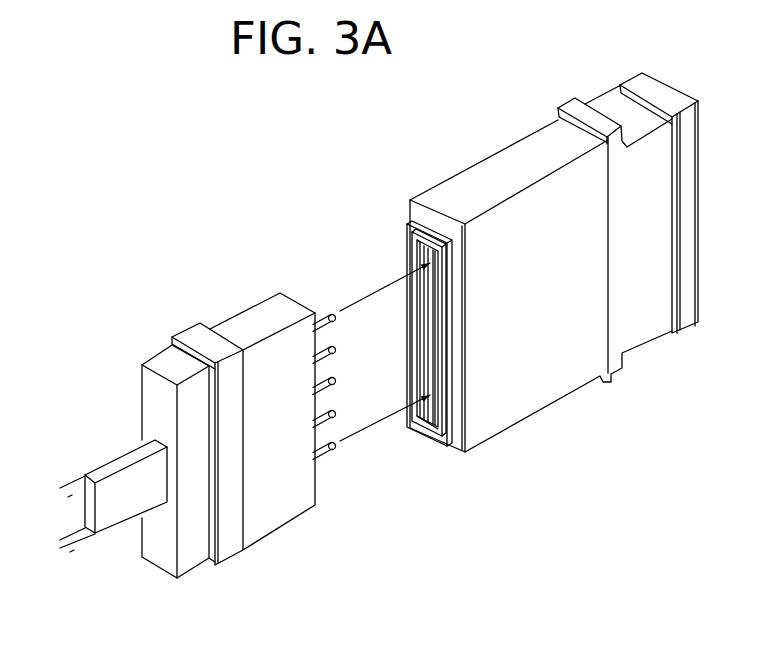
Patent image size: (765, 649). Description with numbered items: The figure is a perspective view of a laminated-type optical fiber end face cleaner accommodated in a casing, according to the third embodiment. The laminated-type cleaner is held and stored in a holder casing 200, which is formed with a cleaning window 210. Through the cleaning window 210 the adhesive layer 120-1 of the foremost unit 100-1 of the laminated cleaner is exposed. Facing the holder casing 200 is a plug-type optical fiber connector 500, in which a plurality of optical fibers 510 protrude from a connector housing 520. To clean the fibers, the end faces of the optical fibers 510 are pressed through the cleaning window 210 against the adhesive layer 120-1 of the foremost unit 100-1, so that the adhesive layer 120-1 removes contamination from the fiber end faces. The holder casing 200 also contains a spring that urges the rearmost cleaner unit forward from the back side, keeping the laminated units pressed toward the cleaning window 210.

The holder casing 200 is at (505, 308).
The cleaning window 210 is at (430, 315).
The foremost unit 100-1 is at (428, 417).
The adhesive layer 120-1 is at (425, 340).
The optical fiber connector 500 is at (193, 425).
The optical fibers 510 is at (327, 458).
The connector housing 520 is at (265, 515).